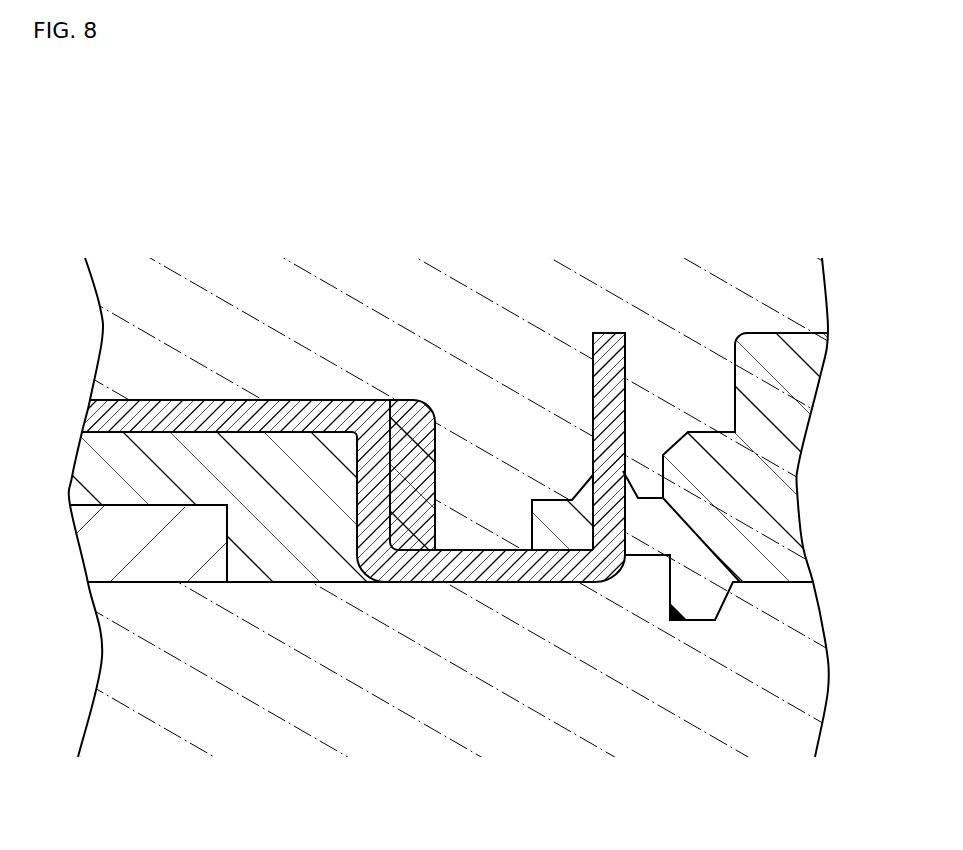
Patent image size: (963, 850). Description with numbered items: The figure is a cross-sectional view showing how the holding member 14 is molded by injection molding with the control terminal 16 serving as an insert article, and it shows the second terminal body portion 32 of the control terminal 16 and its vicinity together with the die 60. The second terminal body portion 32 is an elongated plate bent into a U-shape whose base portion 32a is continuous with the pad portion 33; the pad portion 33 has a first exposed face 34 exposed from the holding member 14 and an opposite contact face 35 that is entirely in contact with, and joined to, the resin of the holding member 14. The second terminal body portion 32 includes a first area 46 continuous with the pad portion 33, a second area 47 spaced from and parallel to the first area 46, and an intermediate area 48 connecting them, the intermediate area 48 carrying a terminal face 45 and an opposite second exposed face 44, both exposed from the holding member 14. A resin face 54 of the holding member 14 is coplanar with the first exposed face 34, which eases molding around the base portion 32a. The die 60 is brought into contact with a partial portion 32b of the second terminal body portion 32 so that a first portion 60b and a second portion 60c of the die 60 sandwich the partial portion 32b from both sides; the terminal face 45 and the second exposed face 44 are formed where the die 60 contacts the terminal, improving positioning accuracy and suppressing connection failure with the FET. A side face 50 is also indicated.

The holding member 14 is at (289, 583).
The control terminal 16 is at (125, 400).
The second terminal body portion 32 is at (457, 567).
The base portion 32a is at (383, 400).
The partial portion 32b is at (498, 562).
The pad portion 33 is at (217, 413).
The first exposed face 34 is at (162, 400).
The contact face 35 is at (279, 443).
The second exposed face 44 is at (497, 550).
The terminal face 45 is at (436, 582).
The first area 46 is at (373, 497).
The second area 47 is at (609, 350).
The intermediate area 48 is at (540, 563).
The side surface 50 is at (88, 462).
The resin face 54 is at (392, 398).
The die 60 is at (490, 282).
The first portion 60b is at (513, 505).
The second portion 60c is at (490, 598).